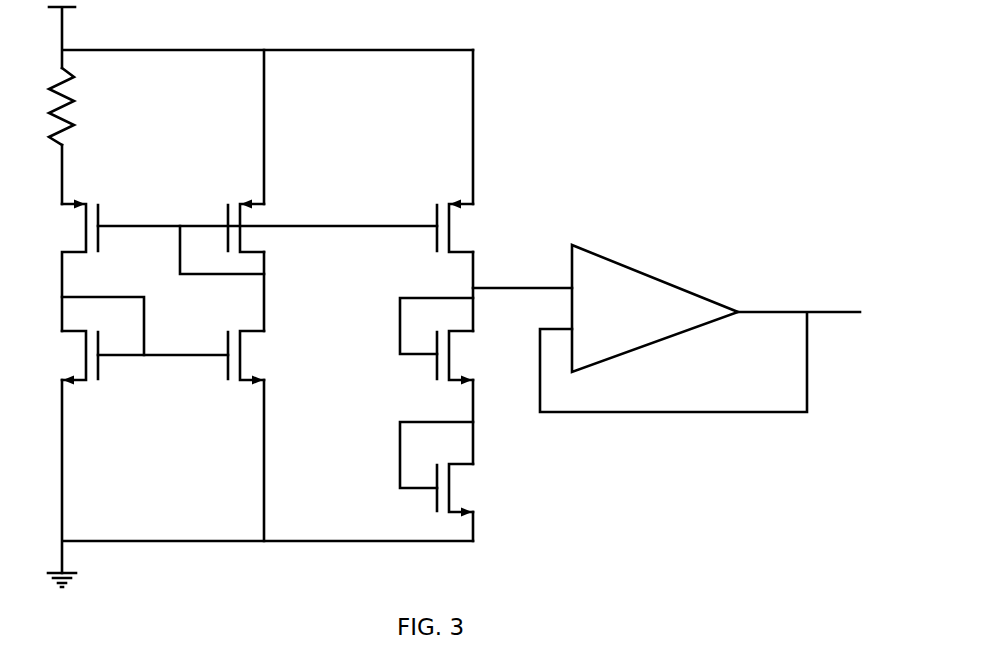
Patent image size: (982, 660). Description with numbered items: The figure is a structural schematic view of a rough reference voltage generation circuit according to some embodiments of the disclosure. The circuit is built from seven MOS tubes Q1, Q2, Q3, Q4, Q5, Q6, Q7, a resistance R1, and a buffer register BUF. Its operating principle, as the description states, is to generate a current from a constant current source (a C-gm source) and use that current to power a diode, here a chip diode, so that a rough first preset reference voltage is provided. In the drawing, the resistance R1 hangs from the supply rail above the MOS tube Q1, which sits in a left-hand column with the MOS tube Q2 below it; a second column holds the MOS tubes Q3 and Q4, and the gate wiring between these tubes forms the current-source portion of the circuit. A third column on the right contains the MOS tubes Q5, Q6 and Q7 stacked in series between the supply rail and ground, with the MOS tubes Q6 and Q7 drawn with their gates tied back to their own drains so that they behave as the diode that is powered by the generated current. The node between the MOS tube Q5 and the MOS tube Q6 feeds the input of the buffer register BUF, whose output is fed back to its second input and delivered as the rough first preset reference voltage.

The resistance R1 is at (87, 106).
The MOS tube Q1 is at (225, 266).
The MOS tube Q2 is at (121, 341).
The MOS tube Q3 is at (270, 218).
The MOS tube Q4 is at (277, 359).
The MOS tube Q5 is at (480, 218).
The MOS tube Q6 is at (415, 341).
The MOS tube Q7 is at (415, 469).
The buffer register BUF is at (700, 328).